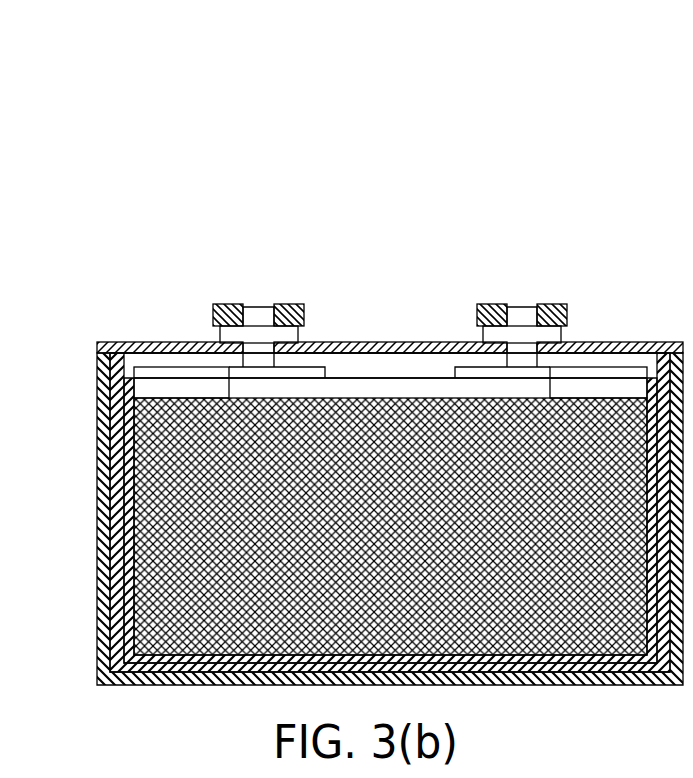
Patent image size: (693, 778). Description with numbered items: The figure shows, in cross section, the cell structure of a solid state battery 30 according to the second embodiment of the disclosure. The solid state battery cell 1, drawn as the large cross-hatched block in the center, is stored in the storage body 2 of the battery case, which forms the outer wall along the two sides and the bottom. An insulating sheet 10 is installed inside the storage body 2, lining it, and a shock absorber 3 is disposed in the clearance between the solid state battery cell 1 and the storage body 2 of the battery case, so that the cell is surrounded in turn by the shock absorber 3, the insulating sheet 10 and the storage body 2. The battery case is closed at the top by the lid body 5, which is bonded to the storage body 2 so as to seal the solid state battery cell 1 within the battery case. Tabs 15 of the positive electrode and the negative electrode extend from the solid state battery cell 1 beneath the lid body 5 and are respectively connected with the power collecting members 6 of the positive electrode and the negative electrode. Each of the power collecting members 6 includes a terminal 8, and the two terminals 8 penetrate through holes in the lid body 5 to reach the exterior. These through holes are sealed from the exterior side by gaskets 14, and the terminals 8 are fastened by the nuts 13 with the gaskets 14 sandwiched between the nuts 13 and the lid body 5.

The solid state battery 30 is at (581, 172).
The solid state battery cell 1 is at (147, 441).
The storage body 2 is at (100, 610).
The shock absorber 3 is at (127, 543).
The lid body 5 is at (105, 341).
The power collecting members 6 is at (315, 366).
The terminals 8 is at (257, 307).
The insulating sheet 10 is at (117, 483).
The nuts 13 is at (227, 304).
The gaskets 14 is at (220, 333).
The tabs 15 is at (175, 367).